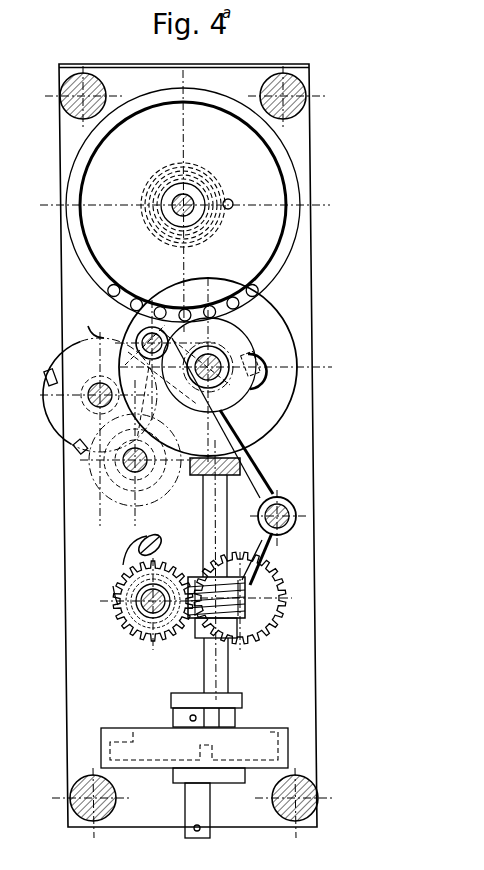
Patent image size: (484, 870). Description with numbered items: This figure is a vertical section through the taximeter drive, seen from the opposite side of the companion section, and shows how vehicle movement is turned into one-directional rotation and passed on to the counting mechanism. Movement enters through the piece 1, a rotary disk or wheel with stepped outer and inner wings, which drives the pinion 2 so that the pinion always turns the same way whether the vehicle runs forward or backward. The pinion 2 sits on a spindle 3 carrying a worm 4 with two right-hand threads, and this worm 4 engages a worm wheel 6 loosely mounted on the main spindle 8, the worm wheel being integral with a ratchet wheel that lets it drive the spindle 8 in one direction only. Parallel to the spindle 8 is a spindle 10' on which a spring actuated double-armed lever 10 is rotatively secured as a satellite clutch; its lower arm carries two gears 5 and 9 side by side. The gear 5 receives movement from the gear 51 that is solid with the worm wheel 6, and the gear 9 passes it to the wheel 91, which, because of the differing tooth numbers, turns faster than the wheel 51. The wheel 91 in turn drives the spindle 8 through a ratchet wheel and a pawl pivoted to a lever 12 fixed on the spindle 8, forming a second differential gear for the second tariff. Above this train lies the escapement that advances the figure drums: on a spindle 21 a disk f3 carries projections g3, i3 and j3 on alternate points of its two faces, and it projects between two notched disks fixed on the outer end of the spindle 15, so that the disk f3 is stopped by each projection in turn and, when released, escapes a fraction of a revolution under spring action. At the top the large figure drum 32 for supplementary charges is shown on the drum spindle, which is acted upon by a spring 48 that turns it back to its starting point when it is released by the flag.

The rotary disk or wheel 1 is at (194, 783).
The pinion 2 is at (195, 742).
The spindle 3 is at (232, 687).
The worm 4 is at (215, 584).
The gear 5 is at (277, 572).
The worm wheel 6 is at (126, 646).
The main spindle 8 is at (137, 608).
The gear 9 is at (249, 598).
The double-armed lever 10 is at (211, 431).
The spindle 10' is at (308, 507).
The lever 12 is at (163, 541).
The spindle 15 is at (134, 473).
The spindle 21 is at (96, 407).
The figure drum 32 is at (288, 172).
The spring 48 is at (200, 176).
The gear 51 is at (208, 645).
The wheel 91 is at (111, 588).
The disk f3 is at (54, 422).
The projection g3 is at (75, 477).
The projection i3 is at (88, 321).
The projection j3 is at (177, 382).